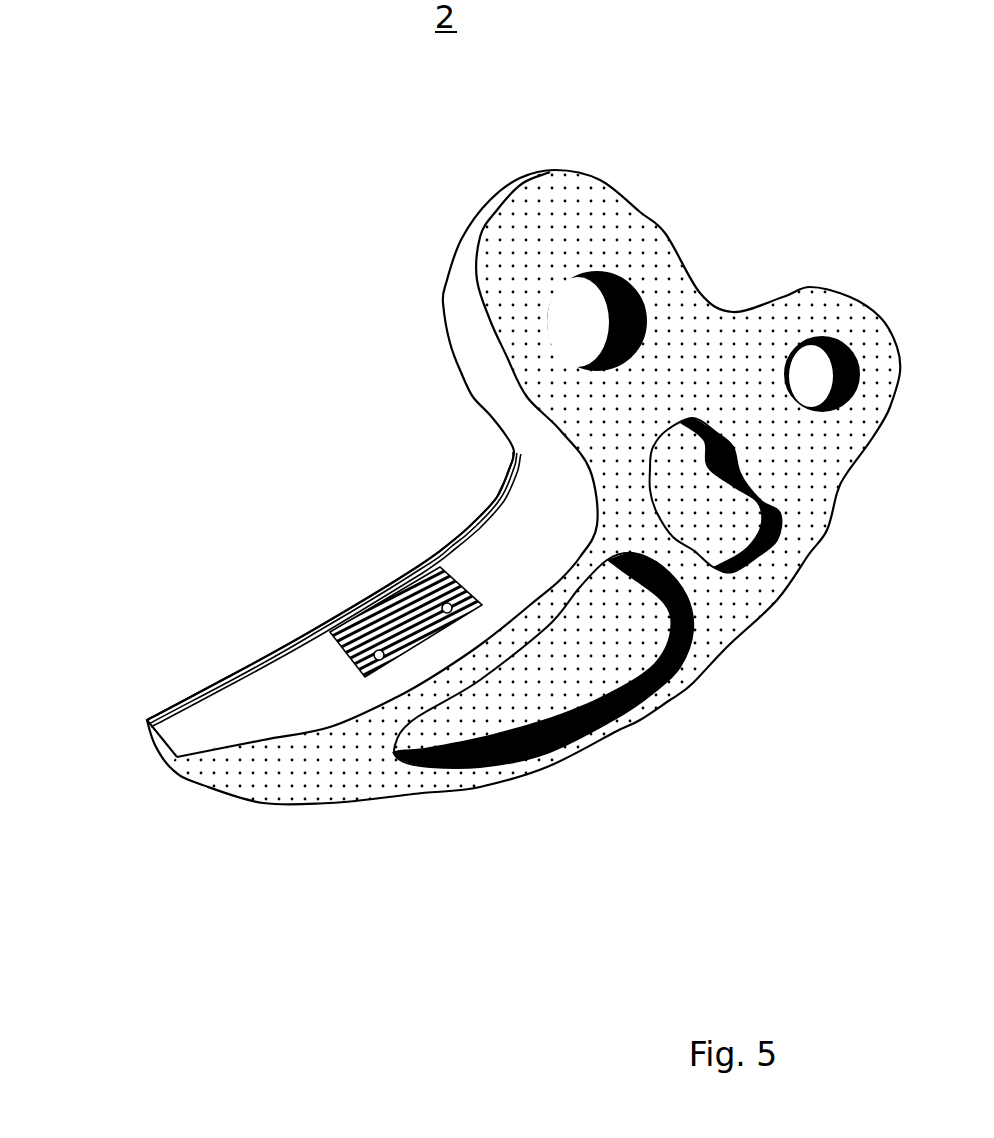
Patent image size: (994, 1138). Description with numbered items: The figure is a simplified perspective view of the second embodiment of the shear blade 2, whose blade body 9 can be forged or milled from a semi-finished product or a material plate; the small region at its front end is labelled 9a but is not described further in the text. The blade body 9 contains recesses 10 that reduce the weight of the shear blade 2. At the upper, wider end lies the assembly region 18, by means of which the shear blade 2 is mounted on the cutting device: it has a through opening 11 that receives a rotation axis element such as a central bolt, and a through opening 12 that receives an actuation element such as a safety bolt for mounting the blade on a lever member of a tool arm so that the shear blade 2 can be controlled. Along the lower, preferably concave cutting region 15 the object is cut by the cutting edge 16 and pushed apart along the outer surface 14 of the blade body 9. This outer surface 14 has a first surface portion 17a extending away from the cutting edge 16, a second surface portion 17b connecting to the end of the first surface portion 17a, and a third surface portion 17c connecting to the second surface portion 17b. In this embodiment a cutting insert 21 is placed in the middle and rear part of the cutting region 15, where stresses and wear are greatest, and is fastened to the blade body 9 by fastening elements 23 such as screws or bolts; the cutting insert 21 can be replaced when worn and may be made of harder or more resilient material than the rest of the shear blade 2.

The shear blade 2 is at (523, 475).
The blade body 9 is at (311, 787).
The front tip of plate 9a is at (150, 748).
The recesses 10 is at (617, 677).
The through opening 11 is at (590, 312).
The through opening 12 is at (820, 368).
The outer surface 14 is at (246, 706).
The cutting region 15 is at (294, 537).
The cutting edge 16 is at (203, 681).
The first surface portion 17a is at (447, 541).
The second surface portion 17b is at (305, 641).
The third surface portion 17c is at (309, 590).
The assembly region 18 is at (460, 188).
The cutting insert 21 is at (375, 612).
The fastening elements 23 is at (446, 604).